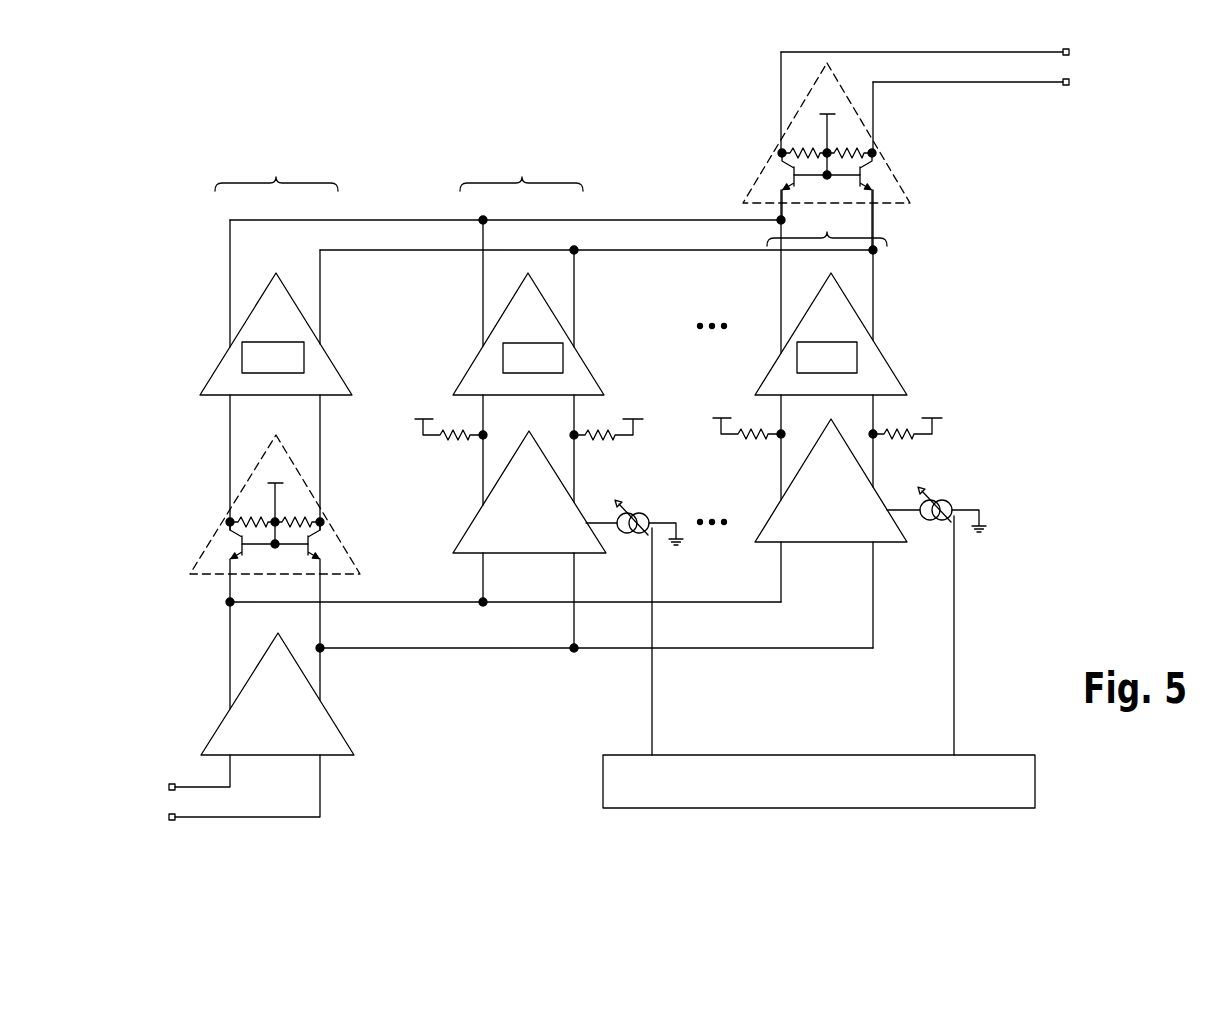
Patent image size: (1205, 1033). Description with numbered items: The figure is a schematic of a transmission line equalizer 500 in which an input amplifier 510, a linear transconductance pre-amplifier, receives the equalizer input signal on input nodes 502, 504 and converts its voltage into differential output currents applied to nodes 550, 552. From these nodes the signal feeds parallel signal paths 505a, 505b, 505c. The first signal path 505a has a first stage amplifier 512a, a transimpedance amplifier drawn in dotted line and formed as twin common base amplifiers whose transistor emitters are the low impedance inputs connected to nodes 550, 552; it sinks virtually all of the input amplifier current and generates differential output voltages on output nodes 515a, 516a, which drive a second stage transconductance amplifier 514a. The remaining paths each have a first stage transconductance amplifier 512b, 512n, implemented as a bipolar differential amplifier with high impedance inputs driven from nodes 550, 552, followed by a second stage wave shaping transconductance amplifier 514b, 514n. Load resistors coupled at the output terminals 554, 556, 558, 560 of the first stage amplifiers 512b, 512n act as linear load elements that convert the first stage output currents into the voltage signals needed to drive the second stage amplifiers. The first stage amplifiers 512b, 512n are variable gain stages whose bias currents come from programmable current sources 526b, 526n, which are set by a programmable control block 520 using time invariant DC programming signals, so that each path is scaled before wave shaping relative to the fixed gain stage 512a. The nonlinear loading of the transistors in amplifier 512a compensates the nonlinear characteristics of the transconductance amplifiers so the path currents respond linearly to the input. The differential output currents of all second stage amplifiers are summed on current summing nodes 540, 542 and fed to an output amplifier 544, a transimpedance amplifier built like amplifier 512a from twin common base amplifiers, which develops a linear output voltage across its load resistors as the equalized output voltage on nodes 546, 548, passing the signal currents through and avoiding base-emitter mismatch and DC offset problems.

The transmission line equalizer 500 is at (184, 132).
The input node 502 is at (175, 792).
The input node 504 is at (175, 822).
The first signal path 505a is at (276, 172).
The signal path 505b is at (521, 172).
The signal path 505c is at (827, 231).
The input amplifier 510 is at (277, 694).
The first stage amplifier 512a is at (333, 529).
The first stage amplifier 512b is at (529, 492).
The first stage amplifier 512n is at (831, 480).
The second stage amplifier 514a is at (330, 357).
The second stage amplifier 514b is at (588, 363).
The second stage amplifier 514n is at (893, 357).
The output node 515a is at (229, 521).
The output node 516a is at (321, 521).
The programmable control block 520 is at (819, 781).
The programmable current source 526b is at (650, 512).
The programmable current source 526n is at (952, 500).
The current summing node 540 is at (630, 219).
The current summing node 542 is at (670, 250).
The output amplifier 544 is at (893, 173).
The output node 546 is at (1070, 48).
The output node 548 is at (1070, 87).
The node 550 is at (408, 603).
The node 552 is at (420, 649).
The resistor node 554 is at (481, 439).
The resistor node 556 is at (576, 439).
The resistor node 558 is at (779, 439).
The resistor node 560 is at (876, 439).